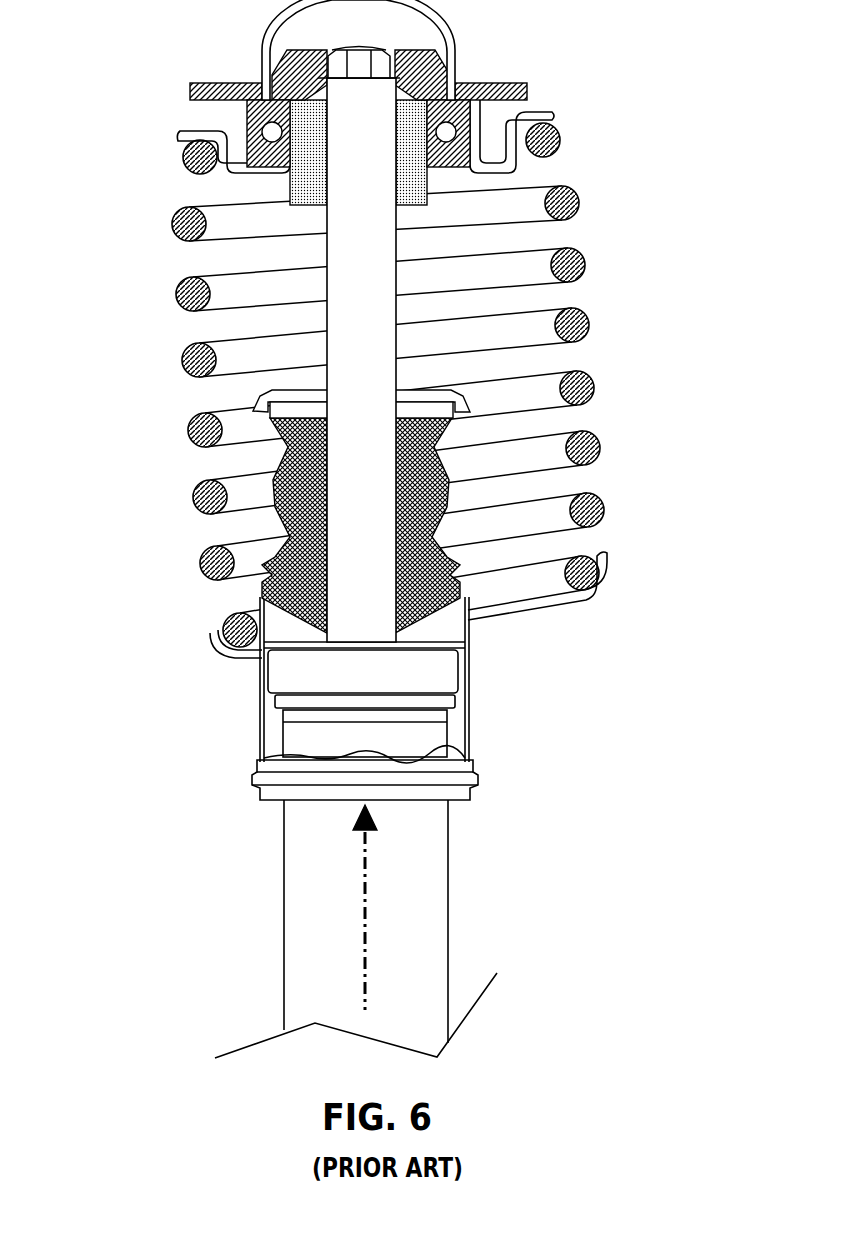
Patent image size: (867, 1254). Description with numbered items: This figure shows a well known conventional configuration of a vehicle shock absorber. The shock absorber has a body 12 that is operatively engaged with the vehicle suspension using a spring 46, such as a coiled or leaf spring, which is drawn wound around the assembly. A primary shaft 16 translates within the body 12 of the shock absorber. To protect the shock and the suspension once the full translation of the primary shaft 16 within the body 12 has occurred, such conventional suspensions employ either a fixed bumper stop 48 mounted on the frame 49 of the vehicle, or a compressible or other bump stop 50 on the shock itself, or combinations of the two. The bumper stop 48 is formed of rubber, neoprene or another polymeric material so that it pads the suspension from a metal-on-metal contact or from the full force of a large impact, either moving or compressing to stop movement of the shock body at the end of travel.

The body 12 is at (435, 912).
The primary shaft 16 is at (372, 253).
The spring 46 is at (242, 362).
The bumper stop 48 is at (313, 183).
The frame 49 is at (455, 63).
The bump stop 50 is at (590, 478).